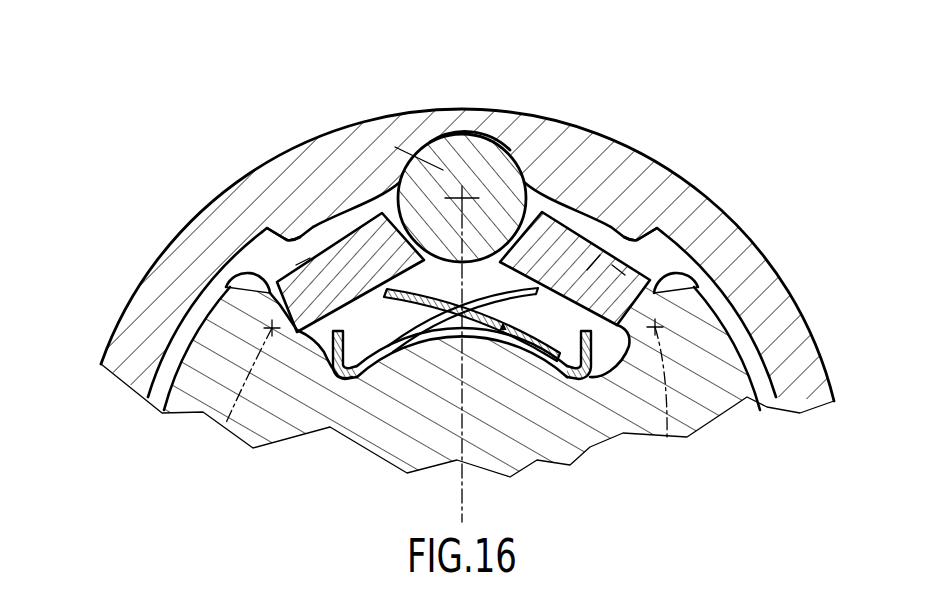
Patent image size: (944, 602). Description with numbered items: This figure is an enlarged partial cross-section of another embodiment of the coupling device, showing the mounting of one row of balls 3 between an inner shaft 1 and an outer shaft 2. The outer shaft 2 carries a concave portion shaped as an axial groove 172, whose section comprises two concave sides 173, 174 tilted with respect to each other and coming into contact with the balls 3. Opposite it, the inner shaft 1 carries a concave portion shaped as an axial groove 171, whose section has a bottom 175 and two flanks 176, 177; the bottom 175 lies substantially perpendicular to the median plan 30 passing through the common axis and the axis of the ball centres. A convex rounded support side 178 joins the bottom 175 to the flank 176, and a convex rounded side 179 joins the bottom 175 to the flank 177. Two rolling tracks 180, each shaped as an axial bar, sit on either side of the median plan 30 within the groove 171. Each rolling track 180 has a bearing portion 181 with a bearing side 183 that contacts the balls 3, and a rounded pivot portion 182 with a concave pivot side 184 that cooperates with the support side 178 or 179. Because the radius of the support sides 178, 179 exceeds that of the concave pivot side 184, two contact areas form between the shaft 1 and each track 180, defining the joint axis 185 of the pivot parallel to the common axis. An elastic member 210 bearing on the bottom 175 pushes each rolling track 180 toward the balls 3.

The inner shaft 1 is at (703, 383).
The outer shaft 2 is at (731, 253).
The balls 3 is at (430, 142).
The median plan 30 is at (463, 480).
The axial groove 171 is at (403, 355).
The axial groove 172 is at (499, 132).
The concave side 173 is at (395, 147).
The concave side 174 is at (533, 182).
The bottom 175 is at (417, 322).
The flank 176 is at (215, 285).
The flank 177 is at (698, 255).
The convex rounded support side 178 is at (283, 320).
The convex rounded side 179 is at (750, 277).
The rolling track 180 is at (296, 265).
The bearing portion 181 is at (357, 262).
The pivot portion 182 is at (292, 238).
The bearing side 183 is at (587, 270).
The concave pivot side 184 is at (643, 270).
The joint axis 185 is at (225, 425).
The elastic member 210 is at (583, 377).